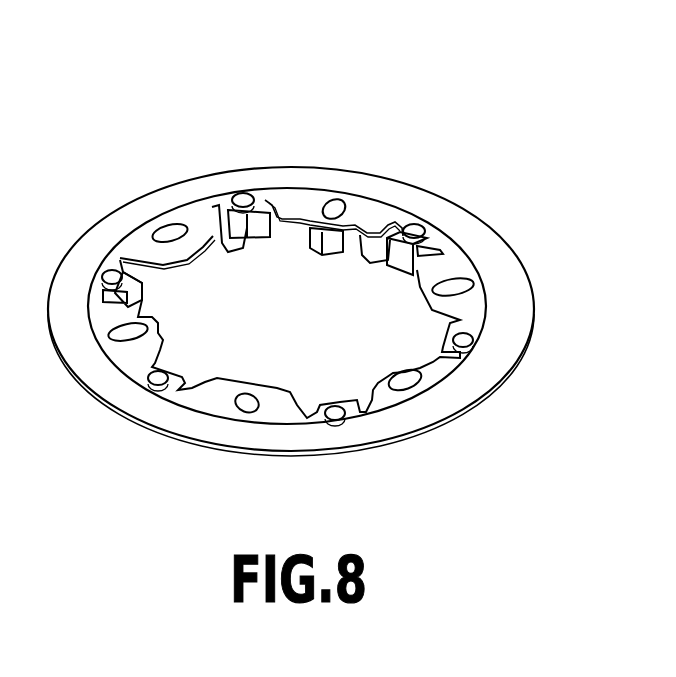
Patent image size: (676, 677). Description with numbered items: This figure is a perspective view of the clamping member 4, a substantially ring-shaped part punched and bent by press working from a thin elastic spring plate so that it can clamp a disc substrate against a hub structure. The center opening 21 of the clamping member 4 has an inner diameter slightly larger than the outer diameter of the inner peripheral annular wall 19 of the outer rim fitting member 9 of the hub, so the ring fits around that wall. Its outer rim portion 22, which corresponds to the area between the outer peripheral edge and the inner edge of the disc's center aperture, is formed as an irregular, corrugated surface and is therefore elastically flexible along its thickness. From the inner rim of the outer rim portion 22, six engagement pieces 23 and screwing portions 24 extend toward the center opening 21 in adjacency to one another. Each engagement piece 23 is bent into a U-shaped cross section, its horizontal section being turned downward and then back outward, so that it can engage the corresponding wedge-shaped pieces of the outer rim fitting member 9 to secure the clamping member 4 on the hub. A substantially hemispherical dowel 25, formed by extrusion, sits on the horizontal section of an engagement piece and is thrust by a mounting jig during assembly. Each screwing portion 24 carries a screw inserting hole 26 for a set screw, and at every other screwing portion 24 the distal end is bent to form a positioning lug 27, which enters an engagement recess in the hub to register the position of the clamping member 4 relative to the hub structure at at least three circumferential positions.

The clamping member 4 is at (458, 78).
The outer rim fitting member 9 is at (462, 207).
The inner peripheral annular wall 19 is at (170, 233).
The center opening 21 is at (382, 322).
The outer rim portion 22 is at (507, 285).
The engagement pieces 23 is at (213, 237).
The screwing portions 24 is at (313, 203).
The dowel 25 is at (243, 195).
The oval hole 26 is at (340, 200).
The positioning lug 27 is at (167, 323).